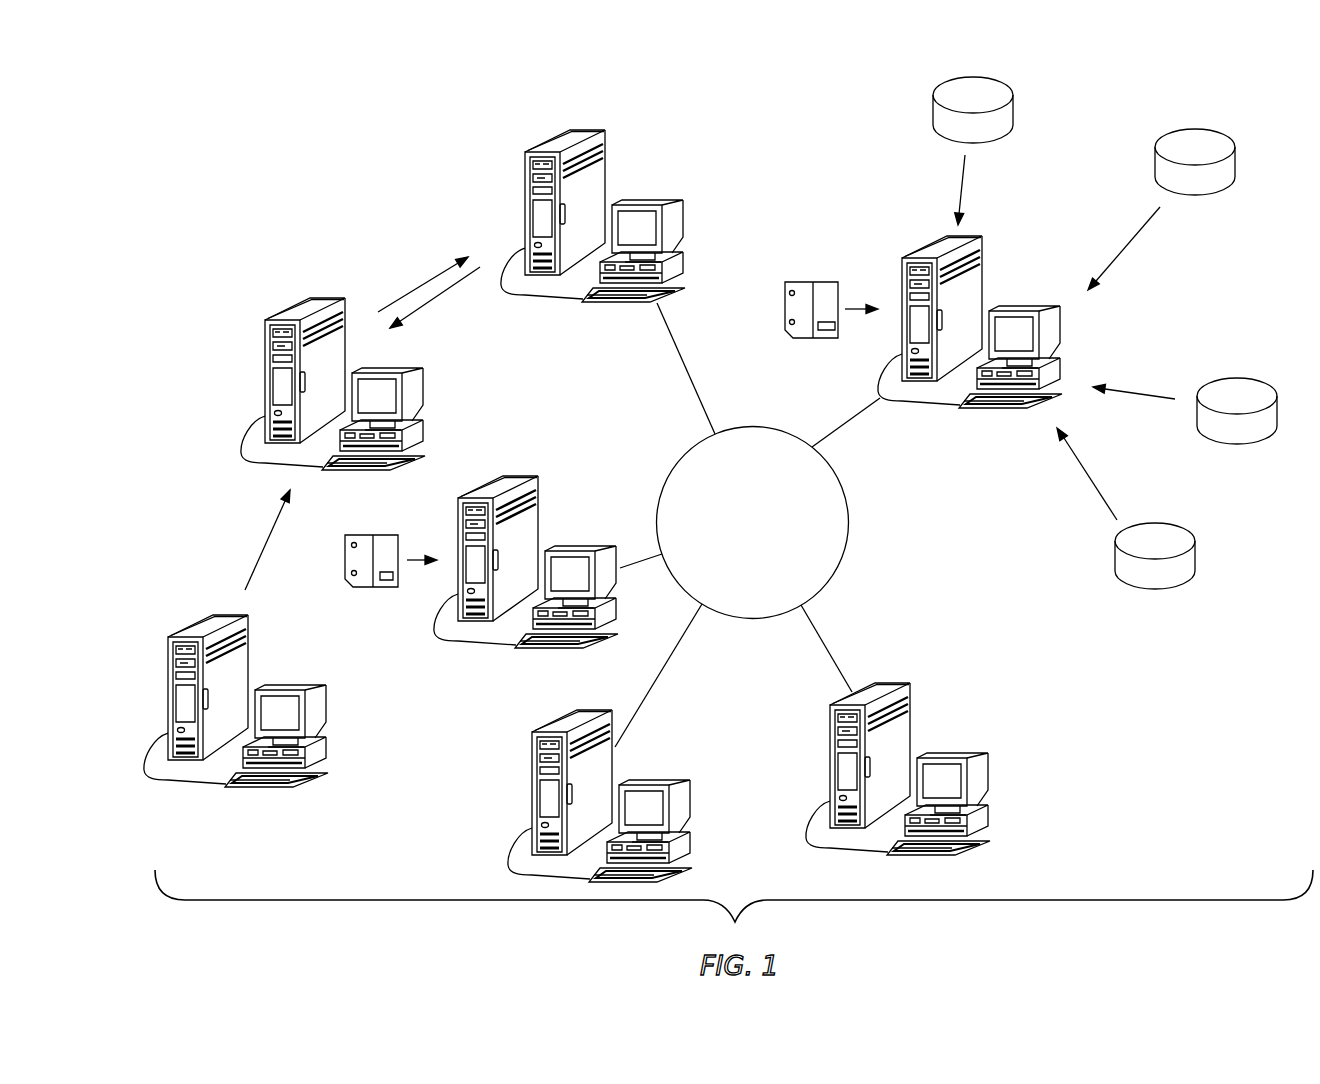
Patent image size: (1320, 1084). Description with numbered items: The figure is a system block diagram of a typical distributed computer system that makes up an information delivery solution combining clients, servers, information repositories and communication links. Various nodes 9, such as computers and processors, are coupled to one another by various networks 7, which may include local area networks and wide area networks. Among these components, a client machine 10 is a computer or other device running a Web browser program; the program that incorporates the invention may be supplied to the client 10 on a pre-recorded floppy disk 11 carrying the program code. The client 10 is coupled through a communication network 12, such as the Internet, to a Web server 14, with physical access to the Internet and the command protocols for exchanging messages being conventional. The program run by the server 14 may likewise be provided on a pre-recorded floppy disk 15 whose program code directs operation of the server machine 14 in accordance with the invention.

The networks 7 is at (427, 278).
The nodes 9 is at (297, 302).
The client machine 10 is at (440, 583).
The floppy disk 11 is at (345, 557).
The communication network 12 is at (769, 541).
The Web server 14 is at (978, 238).
The floppy disk 15 is at (795, 282).